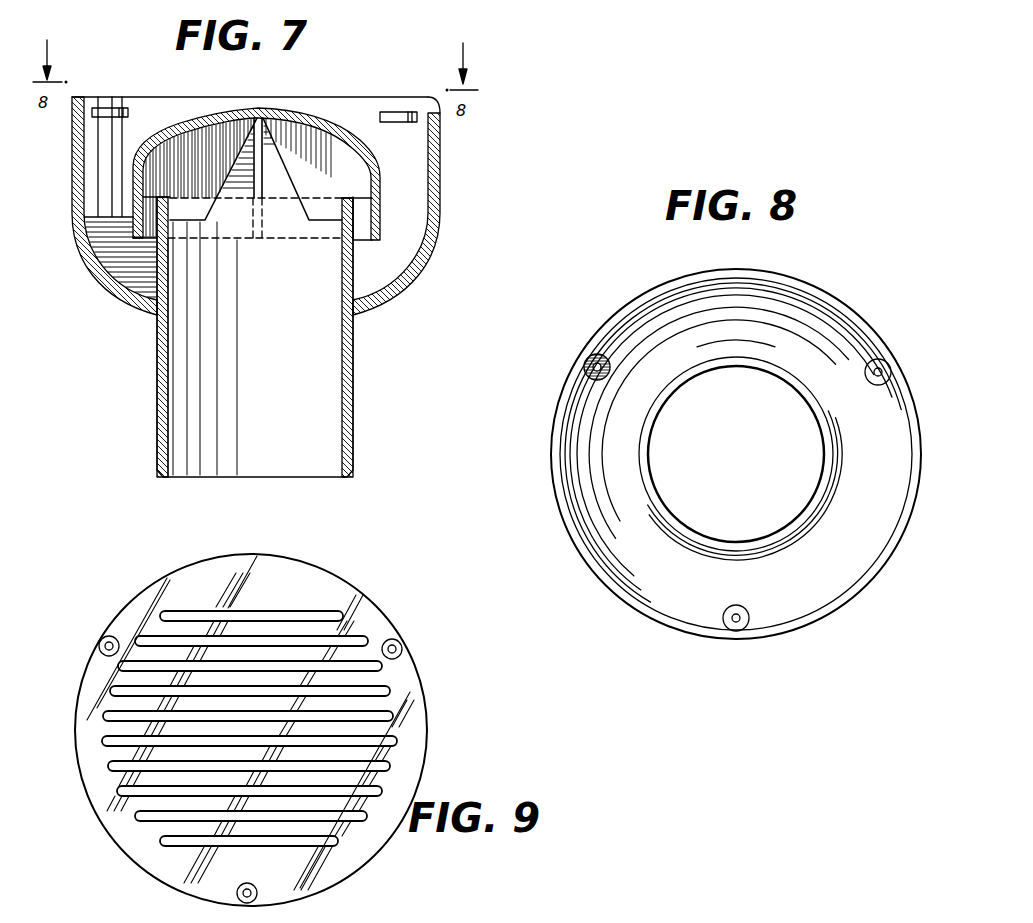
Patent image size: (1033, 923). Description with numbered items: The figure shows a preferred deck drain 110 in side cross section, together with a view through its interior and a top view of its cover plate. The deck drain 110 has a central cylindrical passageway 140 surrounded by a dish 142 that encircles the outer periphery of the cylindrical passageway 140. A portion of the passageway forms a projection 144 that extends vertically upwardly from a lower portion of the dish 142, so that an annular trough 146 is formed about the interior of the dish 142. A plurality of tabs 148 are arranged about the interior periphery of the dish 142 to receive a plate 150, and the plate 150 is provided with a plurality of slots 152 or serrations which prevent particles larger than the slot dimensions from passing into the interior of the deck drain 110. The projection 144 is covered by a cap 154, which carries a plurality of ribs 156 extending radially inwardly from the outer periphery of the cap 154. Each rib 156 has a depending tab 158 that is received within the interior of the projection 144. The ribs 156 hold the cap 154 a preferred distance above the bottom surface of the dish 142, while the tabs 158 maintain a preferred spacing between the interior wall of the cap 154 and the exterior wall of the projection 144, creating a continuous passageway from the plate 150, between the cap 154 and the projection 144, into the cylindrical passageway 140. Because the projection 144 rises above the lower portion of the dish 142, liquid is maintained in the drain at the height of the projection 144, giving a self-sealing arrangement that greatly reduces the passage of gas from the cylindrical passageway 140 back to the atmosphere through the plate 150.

In FIG. 7, the deck drain 110 is at (273, 288).
In FIG. 7, the cylindrical passageway 140 is at (253, 457).
In FIG. 7, the dish 142 is at (435, 230).
In FIG. 8, the dish 142 is at (813, 617).
In FIG. 7, the projection 144 is at (355, 257).
In FIG. 8, the projection 144 is at (643, 460).
In FIG. 7, the annular trough 146 is at (140, 263).
In FIG. 8, the tabs 148 is at (578, 380).
In FIG. 9, the plate 150 is at (410, 692).
In FIG. 9, the slots 152 is at (330, 617).
In FIG. 7, the cap 154 is at (323, 125).
In FIG. 7, the ribs 156 is at (200, 168).
In FIG. 7, the depending tab 158 is at (318, 208).